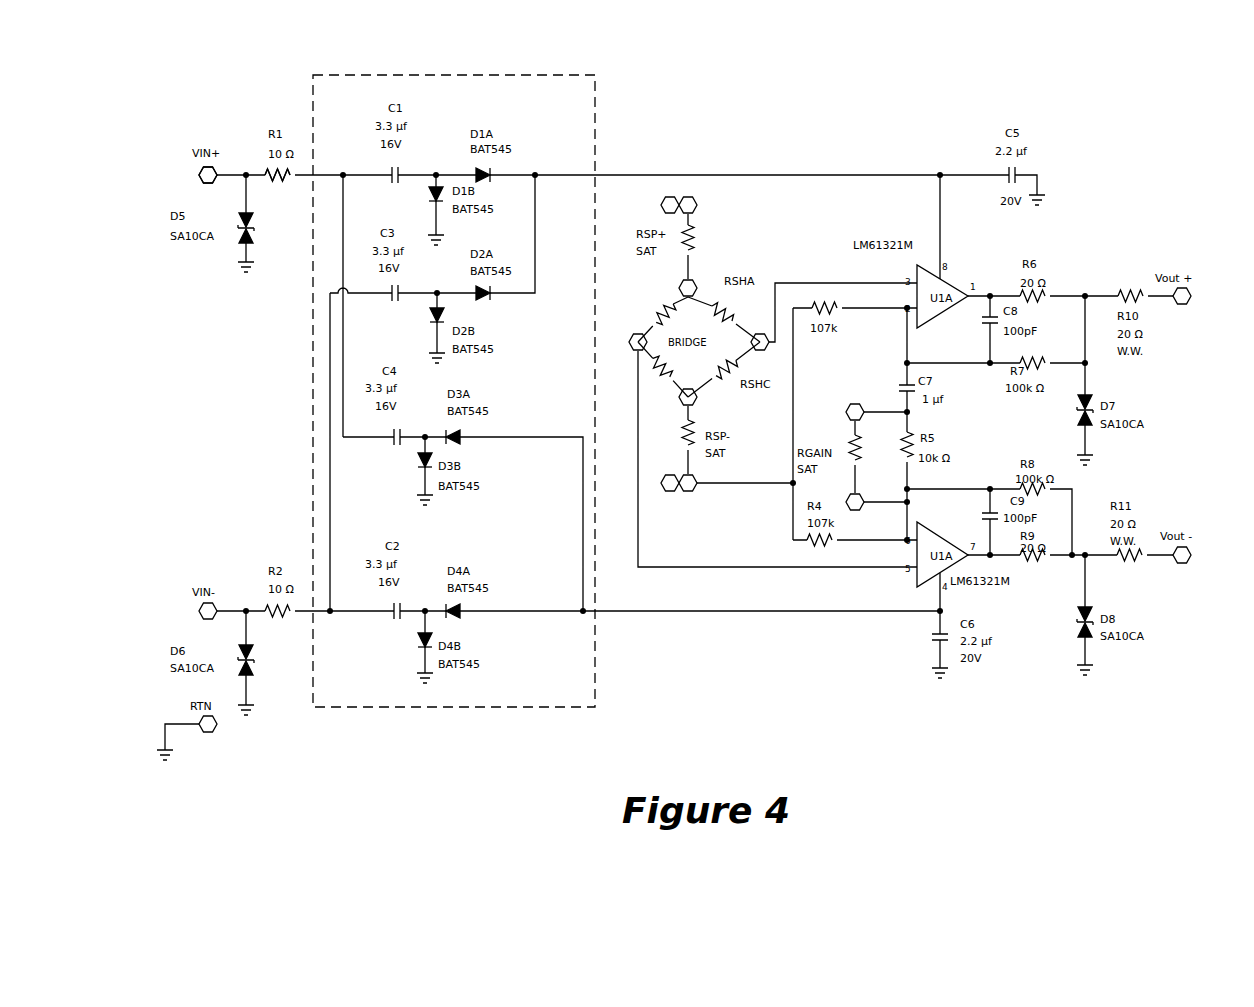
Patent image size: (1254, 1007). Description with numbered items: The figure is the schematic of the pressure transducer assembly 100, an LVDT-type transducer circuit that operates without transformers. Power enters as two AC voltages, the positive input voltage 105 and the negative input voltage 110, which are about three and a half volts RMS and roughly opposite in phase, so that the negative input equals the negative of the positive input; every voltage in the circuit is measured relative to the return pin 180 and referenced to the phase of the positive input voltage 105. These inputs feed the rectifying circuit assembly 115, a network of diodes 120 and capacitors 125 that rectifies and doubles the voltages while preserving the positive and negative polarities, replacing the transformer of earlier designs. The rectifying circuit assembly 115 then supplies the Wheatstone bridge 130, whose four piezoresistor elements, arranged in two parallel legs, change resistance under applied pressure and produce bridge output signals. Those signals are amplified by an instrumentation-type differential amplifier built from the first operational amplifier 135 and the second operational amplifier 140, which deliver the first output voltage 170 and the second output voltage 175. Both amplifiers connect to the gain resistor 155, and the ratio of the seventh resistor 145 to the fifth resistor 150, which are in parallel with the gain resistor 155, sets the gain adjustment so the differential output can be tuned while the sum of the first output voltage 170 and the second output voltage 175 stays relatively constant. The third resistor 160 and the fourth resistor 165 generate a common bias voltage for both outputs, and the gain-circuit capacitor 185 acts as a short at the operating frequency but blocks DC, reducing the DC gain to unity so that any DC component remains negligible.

The pressure transducer assembly 100 is at (250, 112).
The input voltage VIN+ 105 is at (200, 176).
The input voltage VIN− 110 is at (197, 609).
The rectifying circuit assembly 115 is at (595, 117).
The diodes 120 is at (477, 175).
The capacitors 125 is at (392, 297).
The Wheatstone bridge 130 is at (662, 310).
The first operational amplifier U1A 135 is at (945, 272).
The second operational amplifier U1B 140 is at (917, 576).
The resistor R7 145 is at (1075, 360).
The resistor R5 150 is at (905, 430).
The gain resistor RGAIN 155 is at (848, 473).
The resistor R3 160 is at (822, 300).
The resistor R4 165 is at (808, 545).
The output voltage V1 170 is at (1182, 305).
The output voltage V2 175 is at (1182, 566).
The pin RTN 180 is at (218, 730).
The capacitor C7 185 is at (900, 383).